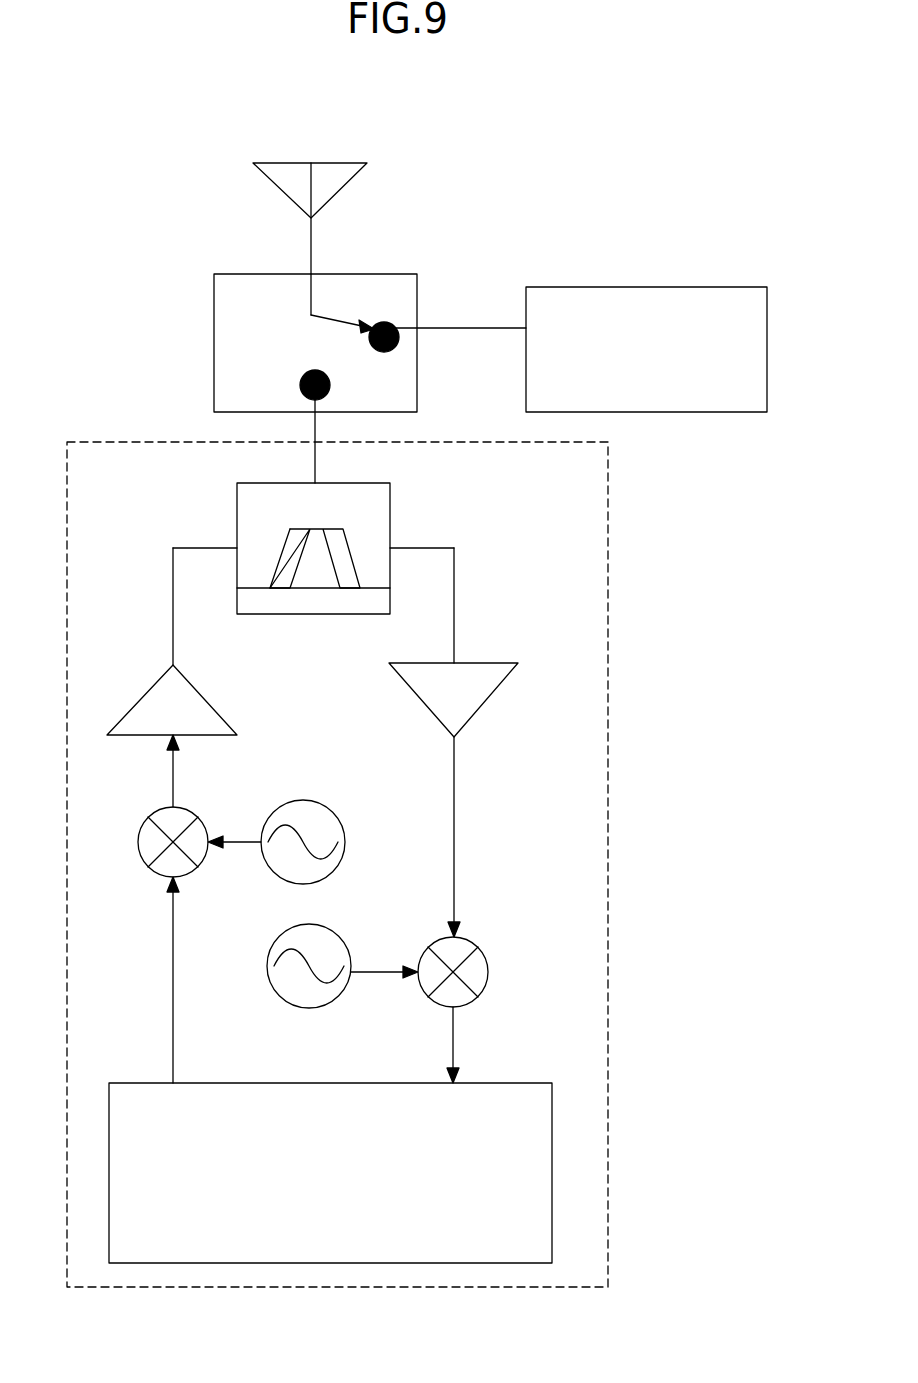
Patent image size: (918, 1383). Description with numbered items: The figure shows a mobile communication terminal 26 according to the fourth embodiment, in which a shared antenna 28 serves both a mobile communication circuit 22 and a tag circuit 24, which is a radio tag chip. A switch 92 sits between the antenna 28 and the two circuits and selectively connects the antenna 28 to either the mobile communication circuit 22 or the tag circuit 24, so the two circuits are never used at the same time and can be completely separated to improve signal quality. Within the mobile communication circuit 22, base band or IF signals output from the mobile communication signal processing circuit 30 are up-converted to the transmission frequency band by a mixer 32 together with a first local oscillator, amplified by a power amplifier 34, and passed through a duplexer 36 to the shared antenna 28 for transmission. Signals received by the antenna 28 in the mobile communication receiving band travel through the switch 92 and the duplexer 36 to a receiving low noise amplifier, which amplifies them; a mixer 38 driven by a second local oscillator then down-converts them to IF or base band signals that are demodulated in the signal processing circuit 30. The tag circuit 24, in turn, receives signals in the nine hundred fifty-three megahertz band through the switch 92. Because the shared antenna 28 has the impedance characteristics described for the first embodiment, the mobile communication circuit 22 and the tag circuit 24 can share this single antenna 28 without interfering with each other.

The mobile communication terminal 26 is at (128, 203).
The shared antenna 28 is at (338, 163).
The switch 92 is at (374, 274).
The tag circuit 24 is at (637, 287).
The mobile communication circuit 22 is at (608, 670).
The duplexer 36 is at (390, 520).
The power amplifier 34 is at (200, 694).
The mixer 32 is at (202, 820).
The mixer 38 is at (482, 950).
The mobile communication signal processing circuit 30 is at (495, 1083).